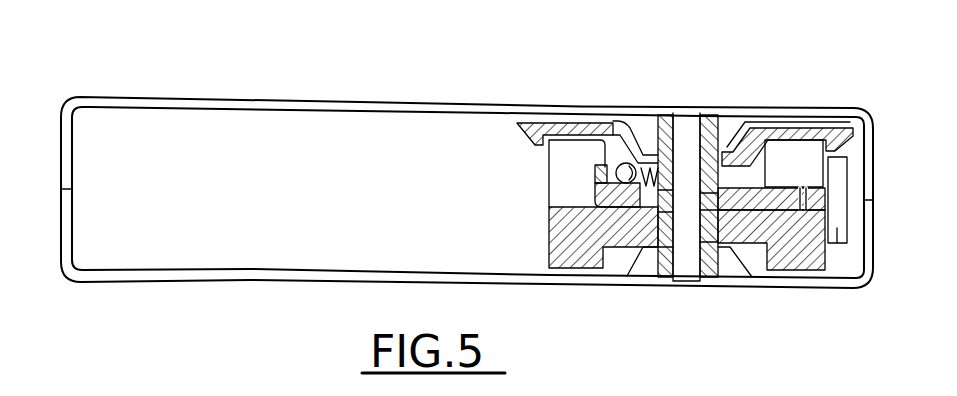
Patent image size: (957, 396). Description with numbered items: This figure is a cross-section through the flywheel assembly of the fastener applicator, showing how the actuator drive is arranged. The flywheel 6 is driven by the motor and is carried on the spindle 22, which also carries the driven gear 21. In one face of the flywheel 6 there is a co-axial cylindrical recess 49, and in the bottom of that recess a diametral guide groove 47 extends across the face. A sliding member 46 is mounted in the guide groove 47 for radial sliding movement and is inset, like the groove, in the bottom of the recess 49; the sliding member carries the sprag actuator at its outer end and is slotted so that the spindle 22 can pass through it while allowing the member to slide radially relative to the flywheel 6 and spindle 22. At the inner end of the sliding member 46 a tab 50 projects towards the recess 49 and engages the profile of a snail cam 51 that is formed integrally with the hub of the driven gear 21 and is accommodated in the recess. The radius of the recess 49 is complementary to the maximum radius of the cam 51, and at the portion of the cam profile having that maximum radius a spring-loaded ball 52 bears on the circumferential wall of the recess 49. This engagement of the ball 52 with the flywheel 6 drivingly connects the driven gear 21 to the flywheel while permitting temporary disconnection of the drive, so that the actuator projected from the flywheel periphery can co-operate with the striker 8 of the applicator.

The flywheel 6 is at (578, 237).
The striker 8 is at (838, 243).
The driven gear 21 is at (840, 130).
The spindle 22 is at (690, 250).
The sliding member 46 is at (778, 228).
The guide groove 47 is at (573, 210).
The cylindrical recess 49 is at (747, 182).
The tab 50 is at (595, 179).
The snail cam 51 is at (728, 147).
The spring-loaded ball 52 is at (618, 178).